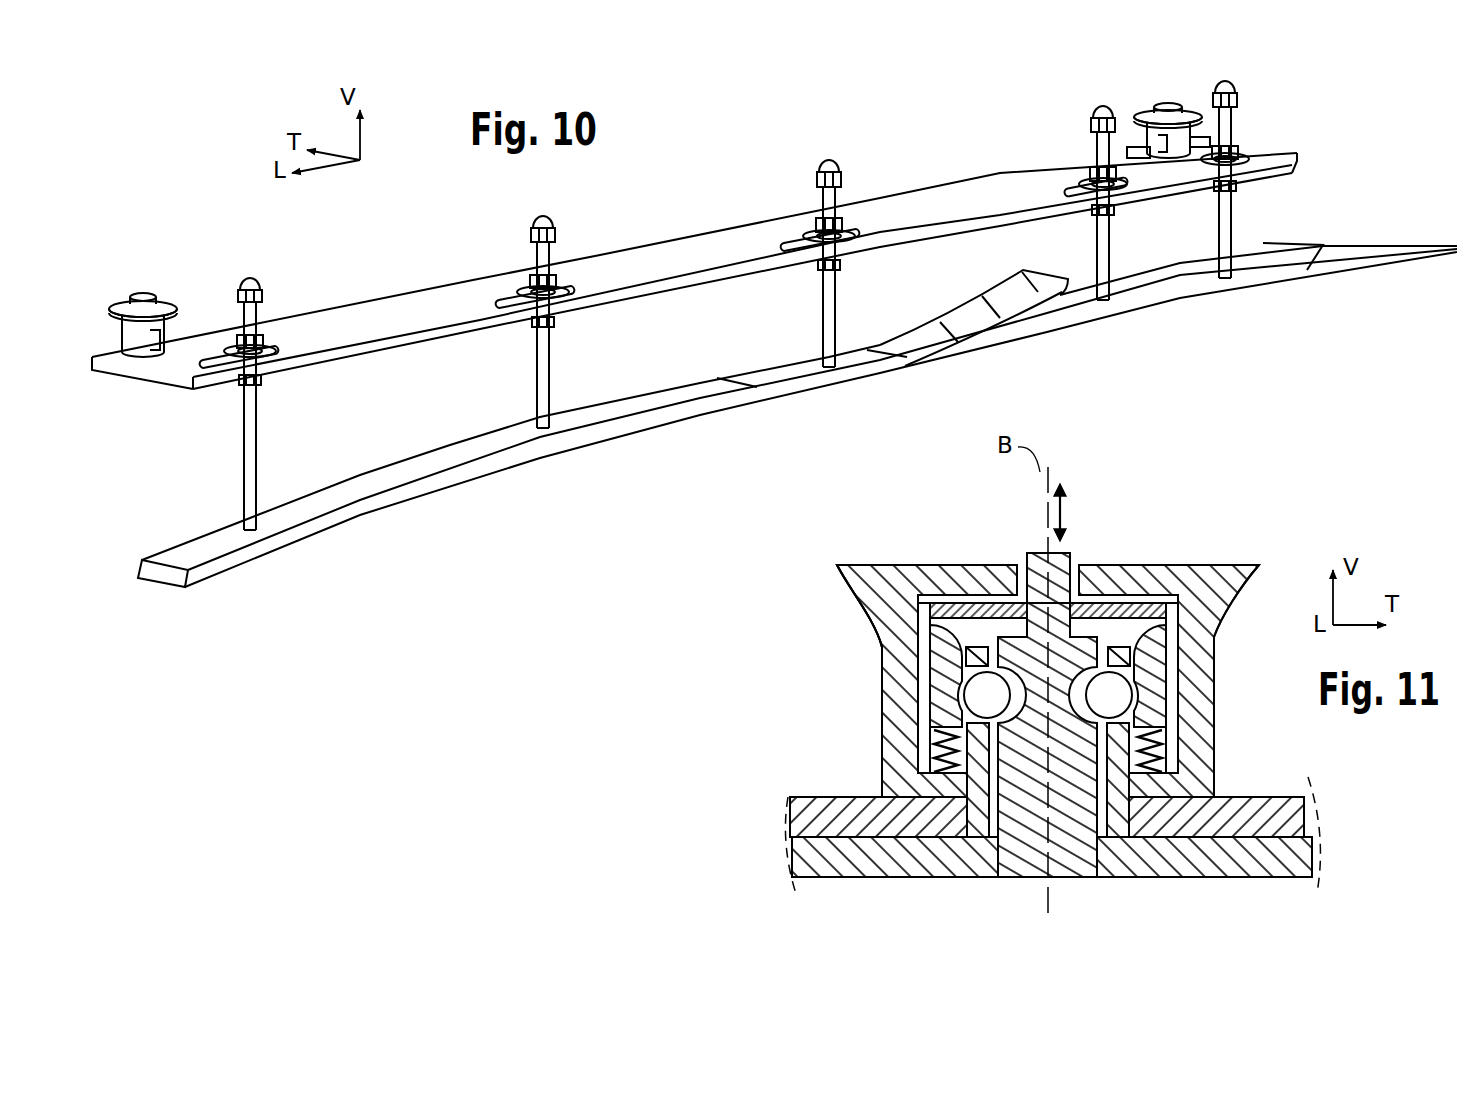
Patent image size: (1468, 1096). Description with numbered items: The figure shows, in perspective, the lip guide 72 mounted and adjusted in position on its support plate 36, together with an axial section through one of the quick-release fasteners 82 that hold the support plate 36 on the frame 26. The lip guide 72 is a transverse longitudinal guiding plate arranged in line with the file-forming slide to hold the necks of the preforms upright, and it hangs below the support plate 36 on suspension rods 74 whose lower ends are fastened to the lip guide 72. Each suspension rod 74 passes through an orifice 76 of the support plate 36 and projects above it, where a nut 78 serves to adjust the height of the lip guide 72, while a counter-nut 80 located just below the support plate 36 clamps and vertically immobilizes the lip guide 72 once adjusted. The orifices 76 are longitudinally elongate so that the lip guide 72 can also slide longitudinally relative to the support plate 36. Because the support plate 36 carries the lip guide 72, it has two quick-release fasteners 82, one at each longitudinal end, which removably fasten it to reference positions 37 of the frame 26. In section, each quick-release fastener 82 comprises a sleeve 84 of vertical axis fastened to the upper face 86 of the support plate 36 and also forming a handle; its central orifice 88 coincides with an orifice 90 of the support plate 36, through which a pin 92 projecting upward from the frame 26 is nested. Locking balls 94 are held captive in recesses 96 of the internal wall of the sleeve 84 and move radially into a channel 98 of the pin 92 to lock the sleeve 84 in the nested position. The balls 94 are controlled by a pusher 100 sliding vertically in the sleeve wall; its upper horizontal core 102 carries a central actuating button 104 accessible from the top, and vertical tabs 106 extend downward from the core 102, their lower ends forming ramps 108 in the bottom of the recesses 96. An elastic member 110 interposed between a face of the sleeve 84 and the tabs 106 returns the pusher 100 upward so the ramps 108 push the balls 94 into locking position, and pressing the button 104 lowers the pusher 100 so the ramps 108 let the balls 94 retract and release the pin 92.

In FIG. 11, the frame 26 is at (887, 853).
In FIG. 10, the support plate 36 is at (690, 257).
In FIG. 11, the support plate 36 is at (1265, 813).
In FIG. 11, the reference position 37 is at (860, 827).
In FIG. 10, the lip guide 72 is at (635, 425).
In FIG. 10, the suspension rod 74 is at (244, 437).
In FIG. 10, the orifice 76 is at (215, 352).
In FIG. 10, the nut 78 is at (270, 335).
In FIG. 10, the counter-nut 80 is at (262, 380).
In FIG. 10, the quick-release fastener 82 is at (120, 283).
In FIG. 11, the quick-release fastener 82 is at (830, 667).
In FIG. 11, the sleeve 84 is at (1197, 687).
In FIG. 11, the upper face 86 is at (1268, 797).
In FIG. 11, the central orifice 88 is at (1030, 627).
In FIG. 11, the orifice 90 is at (1000, 830).
In FIG. 11, the pin 92 is at (1065, 790).
In FIG. 11, the locking ball 94 is at (928, 640).
In FIG. 11, the recess 96 is at (975, 700).
In FIG. 11, the channel 98 is at (1115, 660).
In FIG. 11, the pusher 100 is at (877, 627).
In FIG. 11, the core 102 is at (967, 607).
In FIG. 11, the actuating button 104 is at (1038, 575).
In FIG. 11, the vertical tab 106 is at (1210, 588).
In FIG. 11, the ramp 108 is at (923, 632).
In FIG. 11, the elastic member 110 is at (935, 757).